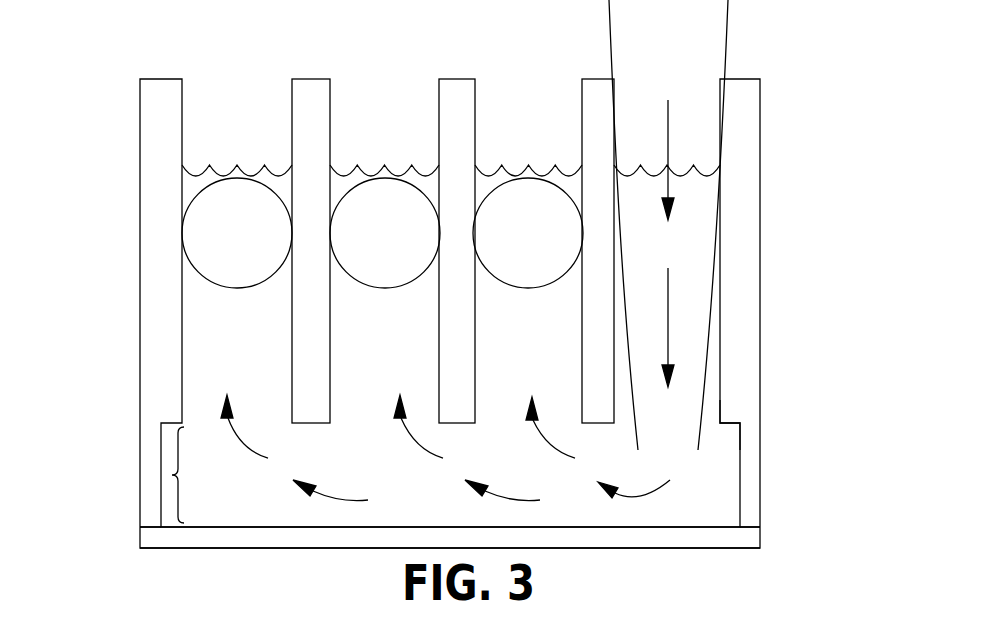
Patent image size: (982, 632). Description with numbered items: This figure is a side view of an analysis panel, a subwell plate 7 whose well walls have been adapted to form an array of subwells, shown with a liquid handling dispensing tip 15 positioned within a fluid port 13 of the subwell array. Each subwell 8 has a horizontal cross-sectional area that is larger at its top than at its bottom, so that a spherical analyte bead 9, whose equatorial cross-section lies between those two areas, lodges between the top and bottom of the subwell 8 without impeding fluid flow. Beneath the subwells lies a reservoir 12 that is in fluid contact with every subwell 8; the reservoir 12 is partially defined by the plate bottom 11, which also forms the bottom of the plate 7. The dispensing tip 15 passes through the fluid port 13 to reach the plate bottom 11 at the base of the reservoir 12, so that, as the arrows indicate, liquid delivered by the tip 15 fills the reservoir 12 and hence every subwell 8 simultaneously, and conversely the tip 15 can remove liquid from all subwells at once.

The subwell plate 7 is at (140, 326).
The subwell 8 is at (218, 123).
The spherical analyte bead 9 is at (237, 235).
The plate bottom 11 is at (703, 547).
The reservoir 12 is at (173, 475).
The fluid port 13 is at (712, 410).
The liquid handling dispensing tip 15 is at (612, 40).